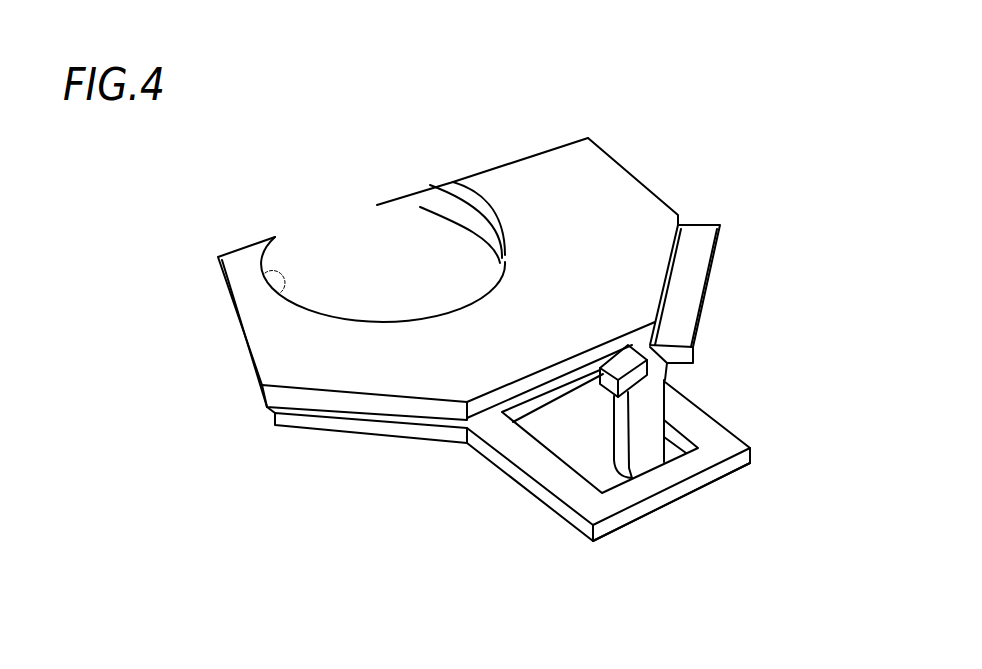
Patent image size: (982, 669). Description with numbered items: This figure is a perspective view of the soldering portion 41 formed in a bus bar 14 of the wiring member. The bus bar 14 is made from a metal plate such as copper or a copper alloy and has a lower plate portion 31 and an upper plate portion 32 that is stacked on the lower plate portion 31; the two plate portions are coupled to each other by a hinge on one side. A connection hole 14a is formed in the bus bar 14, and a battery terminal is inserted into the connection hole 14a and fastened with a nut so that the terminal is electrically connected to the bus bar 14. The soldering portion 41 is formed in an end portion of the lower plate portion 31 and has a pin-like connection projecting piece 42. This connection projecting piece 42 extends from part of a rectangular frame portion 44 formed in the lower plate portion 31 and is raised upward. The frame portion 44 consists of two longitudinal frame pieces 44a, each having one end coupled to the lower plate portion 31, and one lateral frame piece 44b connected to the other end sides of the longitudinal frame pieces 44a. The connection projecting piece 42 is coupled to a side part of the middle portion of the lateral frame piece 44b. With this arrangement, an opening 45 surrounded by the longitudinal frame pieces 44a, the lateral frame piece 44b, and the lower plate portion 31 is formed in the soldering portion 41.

The bus bar 14 is at (622, 170).
The connection hole 14a is at (266, 273).
The lower plate portion 31 is at (303, 420).
The upper plate portion 32 is at (292, 362).
The soldering portion 41 is at (530, 500).
The connection projecting piece 42 is at (647, 372).
The frame portion 44 is at (593, 541).
The longitudinal frame piece 44a is at (477, 460).
The lateral frame piece 44b is at (680, 490).
The opening 45 is at (555, 447).